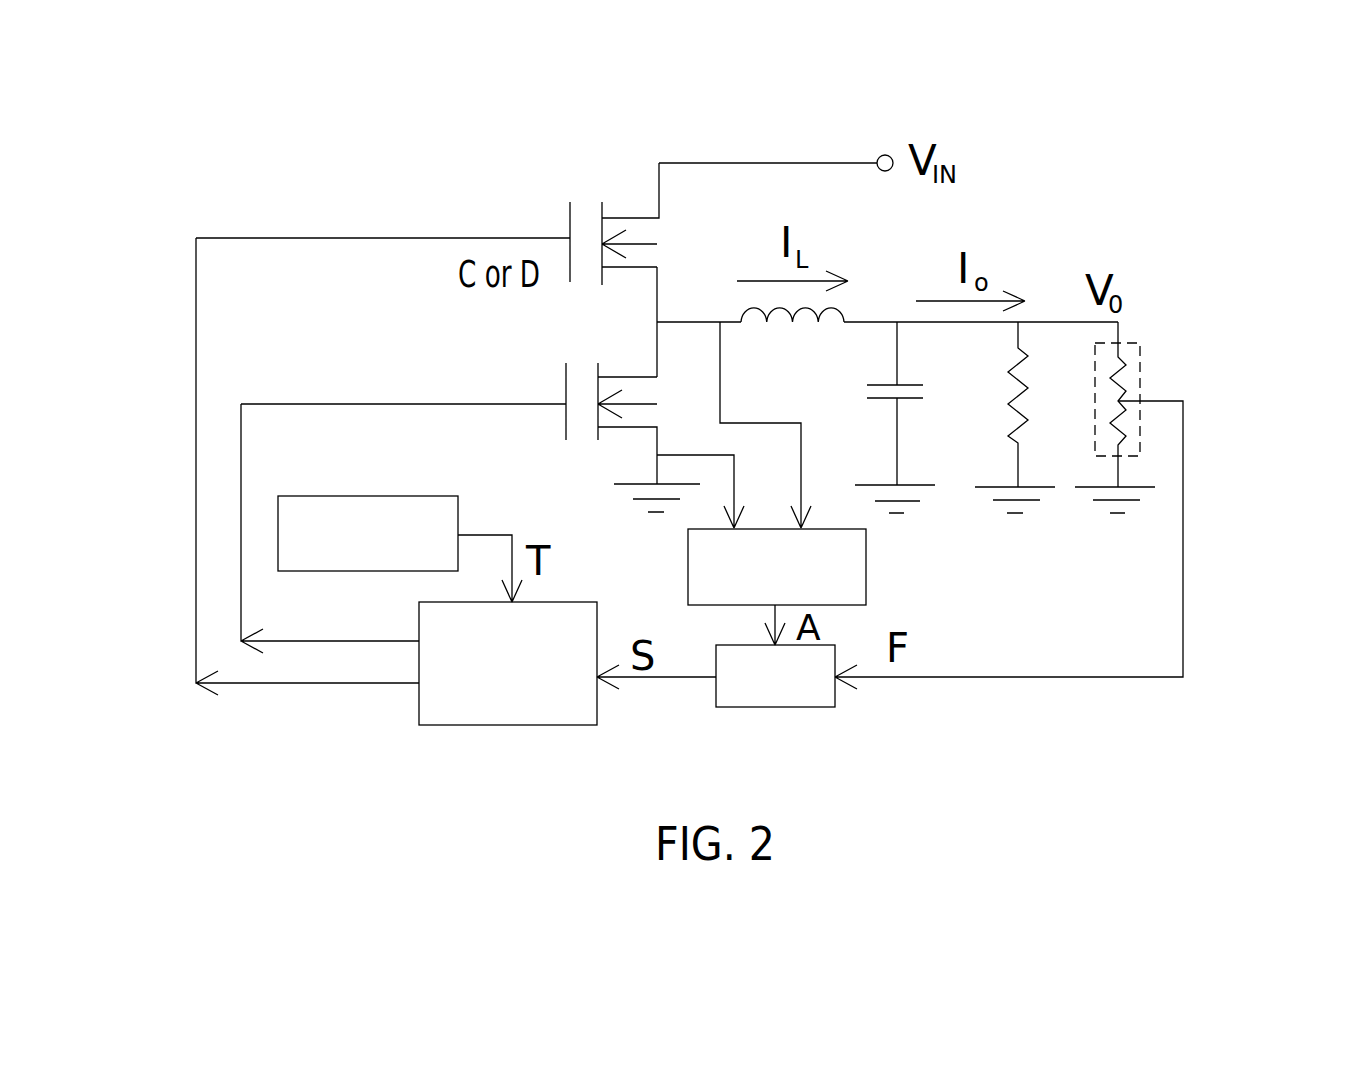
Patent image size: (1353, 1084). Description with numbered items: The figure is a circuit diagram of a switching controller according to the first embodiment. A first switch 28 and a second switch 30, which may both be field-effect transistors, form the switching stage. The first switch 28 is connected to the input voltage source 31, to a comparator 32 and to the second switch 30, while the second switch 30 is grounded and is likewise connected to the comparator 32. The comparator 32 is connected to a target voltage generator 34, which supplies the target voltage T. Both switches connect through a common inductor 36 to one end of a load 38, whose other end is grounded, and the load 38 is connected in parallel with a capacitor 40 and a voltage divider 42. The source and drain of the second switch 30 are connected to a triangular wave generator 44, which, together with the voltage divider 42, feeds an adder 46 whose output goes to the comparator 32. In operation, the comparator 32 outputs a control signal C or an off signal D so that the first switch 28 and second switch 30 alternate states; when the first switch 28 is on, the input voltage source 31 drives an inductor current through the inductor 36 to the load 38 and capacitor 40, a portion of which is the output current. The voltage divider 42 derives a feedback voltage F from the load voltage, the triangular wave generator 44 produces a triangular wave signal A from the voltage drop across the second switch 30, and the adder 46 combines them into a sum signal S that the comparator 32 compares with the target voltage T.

The first switch 28 is at (570, 212).
The second switch 30 is at (566, 380).
The input voltage source 31 is at (879, 157).
The comparator 32 is at (488, 726).
The target voltage generator 34 is at (460, 510).
The inductor 36 is at (843, 316).
The load 38 is at (1005, 385).
The capacitor 40 is at (870, 386).
The voltage divider 42 is at (1142, 380).
The triangular wave generator 44 is at (866, 588).
The adder 46 is at (836, 698).